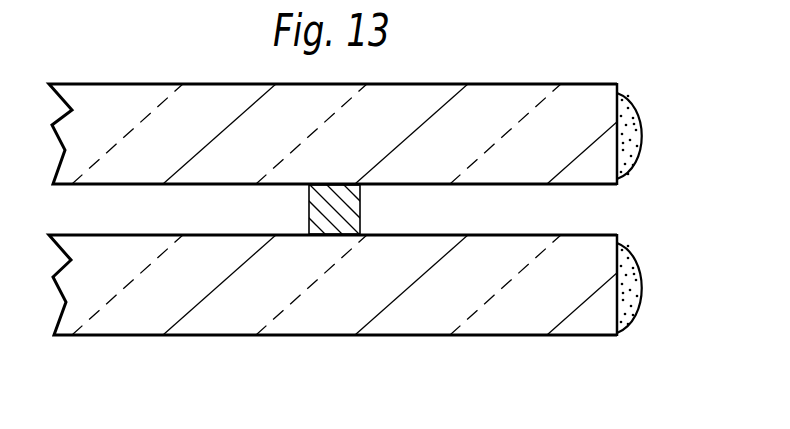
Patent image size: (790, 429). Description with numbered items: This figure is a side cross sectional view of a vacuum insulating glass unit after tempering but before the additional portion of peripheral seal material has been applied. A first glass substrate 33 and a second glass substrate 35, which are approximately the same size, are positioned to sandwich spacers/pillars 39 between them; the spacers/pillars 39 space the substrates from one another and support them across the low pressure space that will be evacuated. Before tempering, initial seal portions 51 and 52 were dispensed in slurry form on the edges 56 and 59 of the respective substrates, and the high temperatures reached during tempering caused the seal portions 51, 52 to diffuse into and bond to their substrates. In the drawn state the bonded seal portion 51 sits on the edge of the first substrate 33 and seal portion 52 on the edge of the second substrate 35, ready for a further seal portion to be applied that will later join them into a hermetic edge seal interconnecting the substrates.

The second glass substrate 35 is at (425, 102).
The first glass substrate 33 is at (225, 303).
The spacers/pillars 39 is at (308, 220).
The initial seal portion 52 is at (641, 136).
The initial seal portion 51 is at (633, 307).
The edge 56 is at (618, 88).
The edge 59 is at (618, 233).